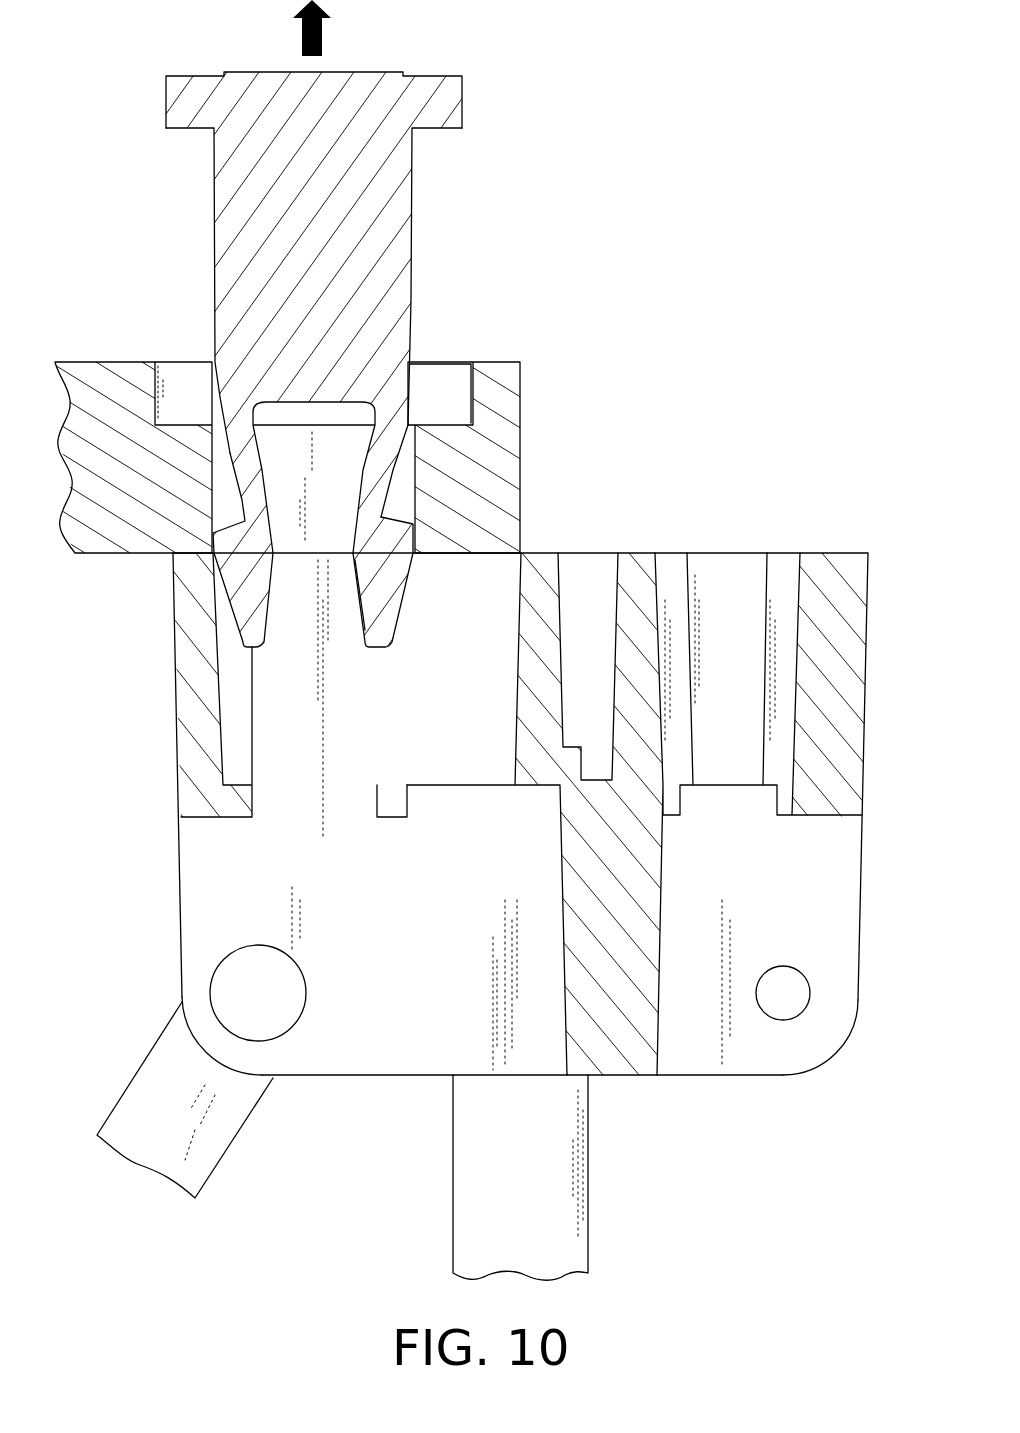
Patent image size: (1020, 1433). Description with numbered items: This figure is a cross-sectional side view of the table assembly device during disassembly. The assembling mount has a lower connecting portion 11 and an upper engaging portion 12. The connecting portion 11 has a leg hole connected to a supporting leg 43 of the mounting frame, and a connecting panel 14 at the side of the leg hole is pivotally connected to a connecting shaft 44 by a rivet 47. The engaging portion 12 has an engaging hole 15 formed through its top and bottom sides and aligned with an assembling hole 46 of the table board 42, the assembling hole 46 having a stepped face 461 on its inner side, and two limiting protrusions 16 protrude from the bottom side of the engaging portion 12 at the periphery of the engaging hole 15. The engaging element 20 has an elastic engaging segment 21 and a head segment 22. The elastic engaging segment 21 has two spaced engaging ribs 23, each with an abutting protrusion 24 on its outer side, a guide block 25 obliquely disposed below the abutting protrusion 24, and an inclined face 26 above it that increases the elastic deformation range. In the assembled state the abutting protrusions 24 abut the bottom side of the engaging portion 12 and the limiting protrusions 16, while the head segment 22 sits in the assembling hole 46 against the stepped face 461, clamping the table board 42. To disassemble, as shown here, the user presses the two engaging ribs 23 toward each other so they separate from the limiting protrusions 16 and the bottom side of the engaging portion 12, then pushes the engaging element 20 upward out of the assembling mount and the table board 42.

The connecting portion 11 is at (510, 883).
The engaging portion 12 is at (510, 808).
The connecting panel 14 is at (362, 1065).
The engaging hole 15 is at (220, 662).
The limiting protrusion 16 is at (403, 800).
The engaging element 20 is at (430, 420).
The elastic engaging segment 21 is at (343, 484).
The head segment 22 is at (371, 82).
The engaging rib 23 is at (405, 632).
The abutting protrusion 24 is at (245, 521).
The guide block 25 is at (390, 596).
The inclined face 26 is at (396, 472).
The table board 42 is at (386, 414).
The supporting leg 43 is at (482, 1228).
The connecting shaft 44 is at (147, 1093).
The assembling hole 46 is at (453, 356).
The stepped face 461 is at (195, 382).
The rivet 47 is at (278, 980).